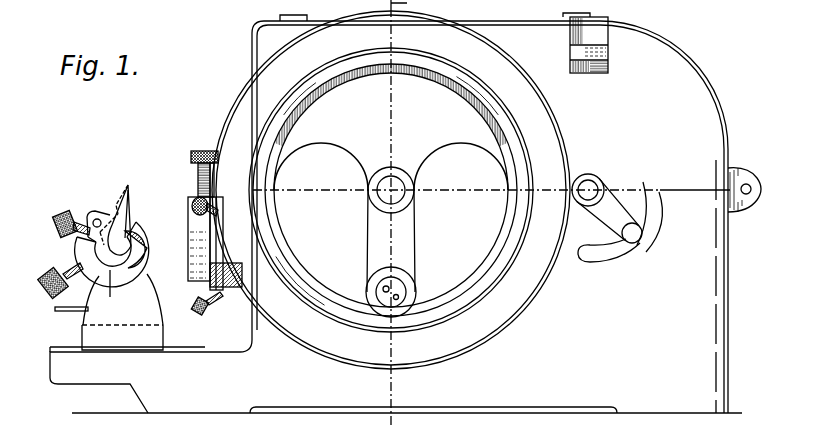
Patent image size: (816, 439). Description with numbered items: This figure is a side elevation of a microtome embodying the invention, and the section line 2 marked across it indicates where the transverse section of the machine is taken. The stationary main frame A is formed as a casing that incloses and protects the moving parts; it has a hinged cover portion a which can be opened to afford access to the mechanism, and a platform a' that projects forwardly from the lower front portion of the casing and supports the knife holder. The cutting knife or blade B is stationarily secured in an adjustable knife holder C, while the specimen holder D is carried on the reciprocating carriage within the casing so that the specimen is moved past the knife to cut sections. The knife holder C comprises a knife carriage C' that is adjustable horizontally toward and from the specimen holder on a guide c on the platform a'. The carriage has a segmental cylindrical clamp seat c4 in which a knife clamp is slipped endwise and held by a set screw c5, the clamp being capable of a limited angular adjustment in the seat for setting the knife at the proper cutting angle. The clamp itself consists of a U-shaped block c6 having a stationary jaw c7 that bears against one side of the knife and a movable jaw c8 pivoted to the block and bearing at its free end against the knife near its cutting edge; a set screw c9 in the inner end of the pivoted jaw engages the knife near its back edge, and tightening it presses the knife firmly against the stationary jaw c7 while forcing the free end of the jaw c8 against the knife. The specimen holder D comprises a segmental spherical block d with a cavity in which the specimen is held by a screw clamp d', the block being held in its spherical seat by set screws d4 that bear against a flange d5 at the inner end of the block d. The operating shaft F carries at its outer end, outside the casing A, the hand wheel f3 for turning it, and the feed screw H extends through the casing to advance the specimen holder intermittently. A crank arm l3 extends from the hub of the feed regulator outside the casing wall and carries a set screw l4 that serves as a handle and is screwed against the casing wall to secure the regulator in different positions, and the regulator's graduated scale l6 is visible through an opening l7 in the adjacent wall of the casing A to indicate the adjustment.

The section line 2— 2 is at (491, 218).
The main frame A is at (724, 123).
The hinged cover portion a is at (407, 254).
The platform a' is at (127, 382).
The guide c is at (200, 347).
The hand wheel f3 is at (391, 190).
The operating shaft F is at (394, 182).
The feed screw H is at (594, 186).
The crank arm l3 is at (606, 223).
The set screw l4 is at (642, 243).
The graduated scale l6 is at (583, 73).
The opening l7 is at (609, 68).
The screw clamp d' is at (200, 147).
The segmental spherical block d is at (192, 205).
The set screw d4 is at (197, 203).
The specimen holder D is at (190, 268).
The flange d5 is at (243, 285).
The knife carriage C' is at (101, 336).
The knife holder C is at (119, 250).
The cutting knife B is at (130, 225).
The stationary jaw c7 is at (132, 208).
The movable jaw c8 is at (117, 200).
The set screw c9 is at (63, 214).
The clamp seat c4 is at (76, 255).
The set screw c5 is at (44, 295).
The U-shaped block c6 is at (111, 295).